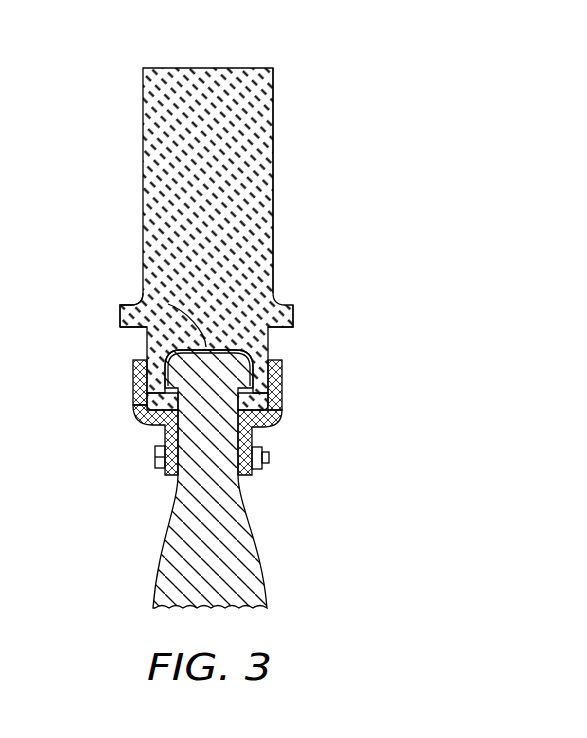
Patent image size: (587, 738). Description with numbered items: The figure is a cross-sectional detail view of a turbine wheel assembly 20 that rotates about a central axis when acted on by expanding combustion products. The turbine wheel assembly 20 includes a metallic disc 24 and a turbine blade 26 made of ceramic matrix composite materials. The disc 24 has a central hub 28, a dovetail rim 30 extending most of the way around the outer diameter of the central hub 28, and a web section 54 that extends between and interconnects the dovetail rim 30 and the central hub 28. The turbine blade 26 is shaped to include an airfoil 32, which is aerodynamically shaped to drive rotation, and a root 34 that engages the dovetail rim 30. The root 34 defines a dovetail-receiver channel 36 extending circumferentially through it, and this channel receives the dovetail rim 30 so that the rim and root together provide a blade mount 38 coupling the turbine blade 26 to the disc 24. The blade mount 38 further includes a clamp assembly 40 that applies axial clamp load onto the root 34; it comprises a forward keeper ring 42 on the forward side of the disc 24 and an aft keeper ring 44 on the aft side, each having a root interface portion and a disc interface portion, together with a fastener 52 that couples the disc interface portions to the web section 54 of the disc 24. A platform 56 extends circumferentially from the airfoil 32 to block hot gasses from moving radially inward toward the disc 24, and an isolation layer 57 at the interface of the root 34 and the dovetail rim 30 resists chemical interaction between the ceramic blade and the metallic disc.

The turbine wheel assembly 20 is at (98, 110).
The disc 24 is at (266, 548).
The turbine blade 26 is at (276, 135).
The central hub 28 is at (268, 594).
The dovetail rim 30 is at (248, 343).
The airfoil 32 is at (274, 170).
The root 34 is at (272, 378).
The dovetail-receiver channel 36 is at (144, 294).
The blade mount 38 is at (432, 382).
The clamp assembly 40 is at (63, 463).
The forward keeper ring 42 is at (133, 418).
The aft keeper ring 44 is at (278, 426).
The fastener 52 is at (155, 455).
The web section 54 is at (263, 461).
The platform 56 is at (296, 315).
The isolation layer 57 is at (133, 380).